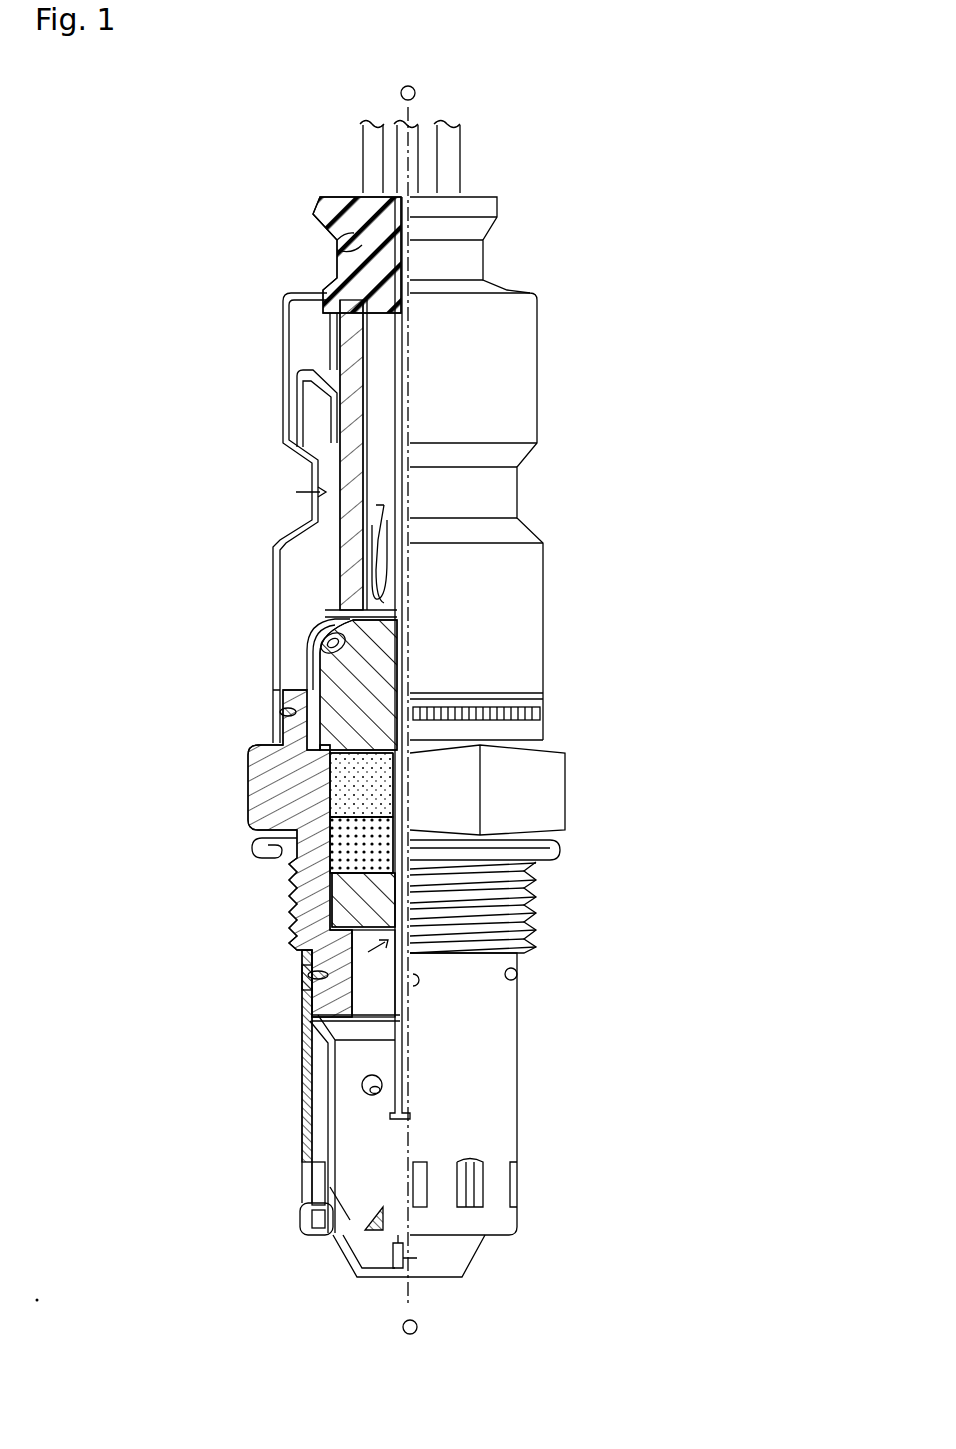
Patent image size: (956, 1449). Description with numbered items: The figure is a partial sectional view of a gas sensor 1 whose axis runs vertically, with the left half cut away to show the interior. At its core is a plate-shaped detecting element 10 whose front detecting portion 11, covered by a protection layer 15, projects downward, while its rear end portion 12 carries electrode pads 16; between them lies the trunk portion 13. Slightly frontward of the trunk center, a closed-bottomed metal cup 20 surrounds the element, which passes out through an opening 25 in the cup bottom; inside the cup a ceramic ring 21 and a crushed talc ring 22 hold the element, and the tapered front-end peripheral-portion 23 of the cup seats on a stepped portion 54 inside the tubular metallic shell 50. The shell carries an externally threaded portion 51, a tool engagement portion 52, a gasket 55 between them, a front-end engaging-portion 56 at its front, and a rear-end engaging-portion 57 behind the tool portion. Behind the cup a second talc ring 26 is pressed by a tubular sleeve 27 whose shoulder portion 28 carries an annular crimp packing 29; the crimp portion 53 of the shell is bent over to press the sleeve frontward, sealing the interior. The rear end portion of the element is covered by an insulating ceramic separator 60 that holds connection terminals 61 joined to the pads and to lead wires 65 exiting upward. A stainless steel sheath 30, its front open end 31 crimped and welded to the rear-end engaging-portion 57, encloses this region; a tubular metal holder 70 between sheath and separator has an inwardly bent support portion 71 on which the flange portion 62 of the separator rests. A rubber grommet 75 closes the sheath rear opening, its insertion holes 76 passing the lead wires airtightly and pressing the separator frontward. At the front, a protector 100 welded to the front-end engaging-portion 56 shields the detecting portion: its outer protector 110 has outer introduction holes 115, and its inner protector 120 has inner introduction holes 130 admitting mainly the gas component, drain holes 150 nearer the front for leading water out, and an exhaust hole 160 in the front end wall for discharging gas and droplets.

The gas sensor 1 is at (446, 714).
The detecting element 10 is at (348, 1005).
The detecting portion 11 is at (340, 1123).
The rear end portion 12 is at (292, 520).
The trunk portion 13 is at (403, 795).
The protection layer 15 is at (390, 1050).
The electrode pads 16 is at (312, 475).
The metal cup 20 is at (292, 880).
The ceramic ring 21 is at (296, 900).
The talc ring 22 is at (258, 852).
The front-end peripheral-portion 23 is at (296, 942).
The opening 25 is at (322, 978).
The talc ring 26 is at (360, 760).
The sleeve 27 is at (343, 592).
The shoulder portion 28 is at (345, 680).
The crimp packing 29 is at (340, 650).
The sheath 30 is at (569, 425).
The open end 31 is at (300, 733).
The metallic shell 50 is at (580, 757).
The externally threaded portion 51 is at (300, 922).
The tool engagement portion 52 is at (326, 790).
The crimp portion 53 is at (335, 612).
The stepped portion 54 is at (303, 962).
The gasket 55 is at (574, 846).
The front-end engaging-portion 56 is at (333, 1012).
The rear-end engaging-portion 57 is at (278, 710).
The separator 60 is at (300, 493).
The connection terminals 61 is at (366, 558).
The flange portion 62 is at (305, 362).
The lead wires 65 is at (445, 186).
The metal holder 70 is at (332, 357).
The support portion 71 is at (328, 418).
The grommet 75 is at (341, 184).
The insertion holes 76 is at (345, 240).
The protector 100 is at (502, 1140).
The outer protector 110 is at (520, 1113).
The outer introduction holes 115 is at (428, 1175).
The inner protector 120 is at (479, 1279).
The inner introduction holes 130 is at (380, 1103).
The drain holes 150 is at (368, 1206).
The exhaust hole 160 is at (403, 1260).